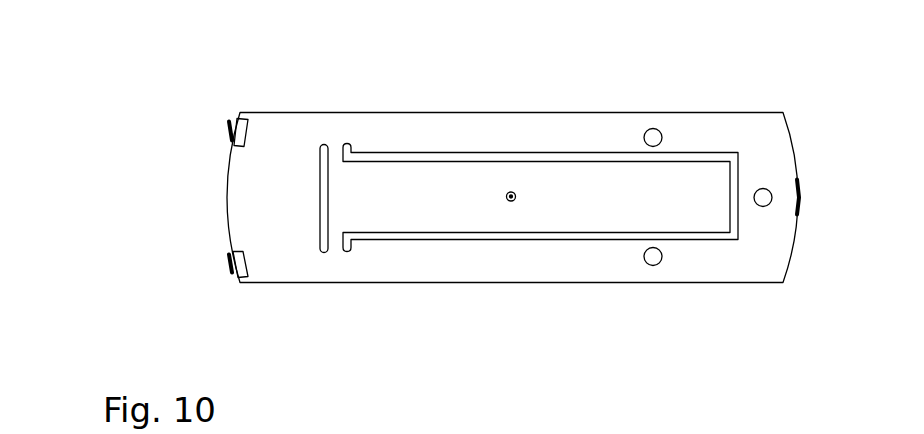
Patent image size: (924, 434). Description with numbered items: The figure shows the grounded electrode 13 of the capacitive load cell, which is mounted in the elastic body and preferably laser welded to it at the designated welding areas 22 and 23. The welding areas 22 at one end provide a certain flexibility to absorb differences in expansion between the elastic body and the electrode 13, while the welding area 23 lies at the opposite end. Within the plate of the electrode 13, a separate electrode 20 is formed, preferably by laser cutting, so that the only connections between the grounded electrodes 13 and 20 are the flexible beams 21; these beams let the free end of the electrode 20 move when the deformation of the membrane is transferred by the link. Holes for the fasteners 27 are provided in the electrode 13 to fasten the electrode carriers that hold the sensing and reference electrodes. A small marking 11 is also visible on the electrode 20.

The center marking 11 is at (509, 192).
The grounded electrode 13 is at (280, 262).
The electrode 20 is at (444, 212).
The flexible beams 21 is at (335, 143).
The welding area 22 is at (232, 132).
The welding area 23 is at (800, 205).
The fasteners 27 is at (650, 130).